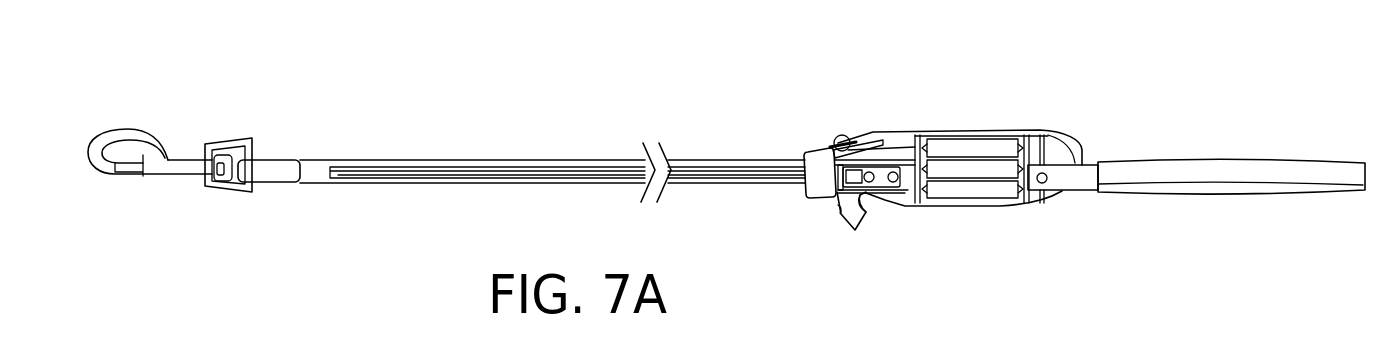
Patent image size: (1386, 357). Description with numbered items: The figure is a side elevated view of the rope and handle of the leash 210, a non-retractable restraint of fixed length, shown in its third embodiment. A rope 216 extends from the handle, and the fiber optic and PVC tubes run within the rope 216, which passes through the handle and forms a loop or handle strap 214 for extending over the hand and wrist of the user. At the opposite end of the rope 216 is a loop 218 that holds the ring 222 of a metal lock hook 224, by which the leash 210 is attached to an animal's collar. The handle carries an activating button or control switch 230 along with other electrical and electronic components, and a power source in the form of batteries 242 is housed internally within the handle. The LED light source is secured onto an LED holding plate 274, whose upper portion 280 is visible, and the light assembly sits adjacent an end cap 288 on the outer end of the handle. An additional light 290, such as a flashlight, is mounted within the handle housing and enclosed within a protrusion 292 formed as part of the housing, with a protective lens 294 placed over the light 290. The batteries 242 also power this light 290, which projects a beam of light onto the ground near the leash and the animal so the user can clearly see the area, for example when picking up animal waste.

The leash 210 is at (898, 132).
The handle strap 214 is at (1170, 172).
The rope 216 is at (315, 160).
The loop 218 is at (280, 172).
The ring 222 is at (207, 188).
The metal lock hook 224 is at (165, 130).
The activating button or control switch 230 is at (838, 136).
The batteries 242 is at (983, 193).
The LED holding plate 274 is at (900, 200).
The upper portion 280 is at (923, 222).
The end cap 288 is at (802, 153).
The light 290 is at (794, 247).
The protrusion 292 is at (866, 208).
The protective lens 294 is at (858, 200).